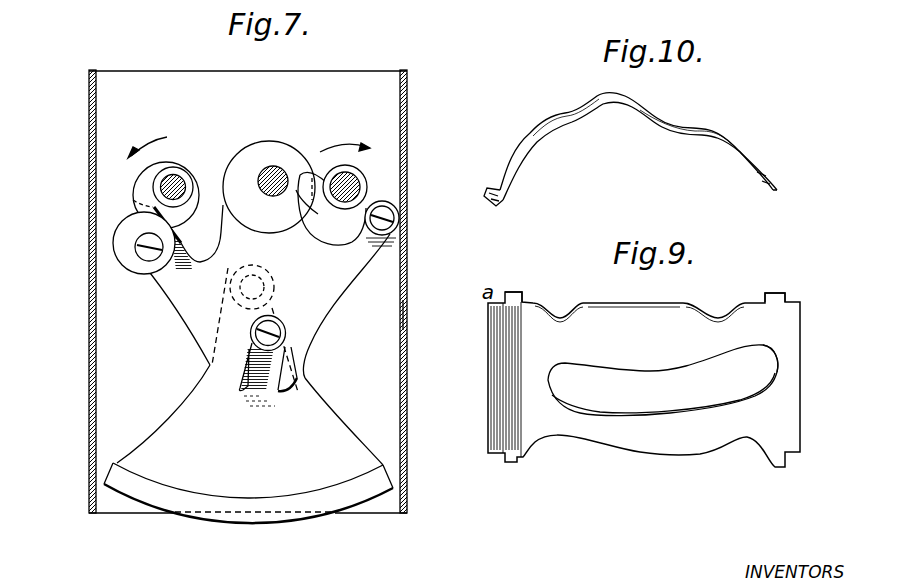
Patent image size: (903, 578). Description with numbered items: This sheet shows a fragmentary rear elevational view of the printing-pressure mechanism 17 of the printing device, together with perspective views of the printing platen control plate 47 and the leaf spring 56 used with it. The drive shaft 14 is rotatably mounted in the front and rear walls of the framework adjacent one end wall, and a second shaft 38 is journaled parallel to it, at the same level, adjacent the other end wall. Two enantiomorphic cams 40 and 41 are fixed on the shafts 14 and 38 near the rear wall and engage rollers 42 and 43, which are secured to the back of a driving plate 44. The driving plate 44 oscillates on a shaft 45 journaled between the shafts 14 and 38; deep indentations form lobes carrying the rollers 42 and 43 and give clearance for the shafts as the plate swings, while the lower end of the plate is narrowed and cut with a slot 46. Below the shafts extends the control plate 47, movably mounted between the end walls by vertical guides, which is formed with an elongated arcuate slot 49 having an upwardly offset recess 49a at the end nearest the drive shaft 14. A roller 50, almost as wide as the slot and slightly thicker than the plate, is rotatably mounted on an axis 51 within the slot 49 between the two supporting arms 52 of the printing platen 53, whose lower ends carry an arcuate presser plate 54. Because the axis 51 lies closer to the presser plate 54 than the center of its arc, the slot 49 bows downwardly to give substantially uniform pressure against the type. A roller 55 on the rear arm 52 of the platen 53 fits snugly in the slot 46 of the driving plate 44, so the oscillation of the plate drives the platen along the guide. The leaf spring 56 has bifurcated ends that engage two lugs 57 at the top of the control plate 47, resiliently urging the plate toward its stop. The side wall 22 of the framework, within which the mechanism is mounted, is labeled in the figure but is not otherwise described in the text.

In FIG. 7, the drive shaft 14 is at (178, 180).
In FIG. 7, the mechanism for furnishing printing pressure 17 is at (90, 386).
In FIG. 7, the frame side wall 22 is at (407, 312).
In FIG. 7, the shaft 38 is at (350, 196).
In FIG. 7, the cam 40 is at (137, 178).
In FIG. 7, the cam 41 is at (303, 191).
In FIG. 7, the roller 42 is at (136, 244).
In FIG. 7, the roller 43 is at (399, 229).
In FIG. 7, the driving plate 44 is at (246, 158).
In FIG. 7, the shaft 45 is at (273, 178).
In FIG. 7, the slot 46 is at (277, 362).
In FIG. 9, the control plate 47 is at (787, 318).
In FIG. 9, the elongated arcuate slot 49 is at (690, 372).
In FIG. 9, the upwardly offset recess 49a is at (750, 357).
In FIG. 7, the roller 50 is at (258, 290).
In FIG. 7, the axis 51 is at (272, 275).
In FIG. 7, the supporting arm 52 is at (182, 429).
In FIG. 7, the printing platen 53 is at (248, 475).
In FIG. 7, the arcuate presser plate 54 is at (333, 497).
In FIG. 7, the roller 55 is at (285, 340).
In FIG. 10, the leaf spring 56 is at (697, 130).
In FIG. 9, the lug 57 is at (520, 292).